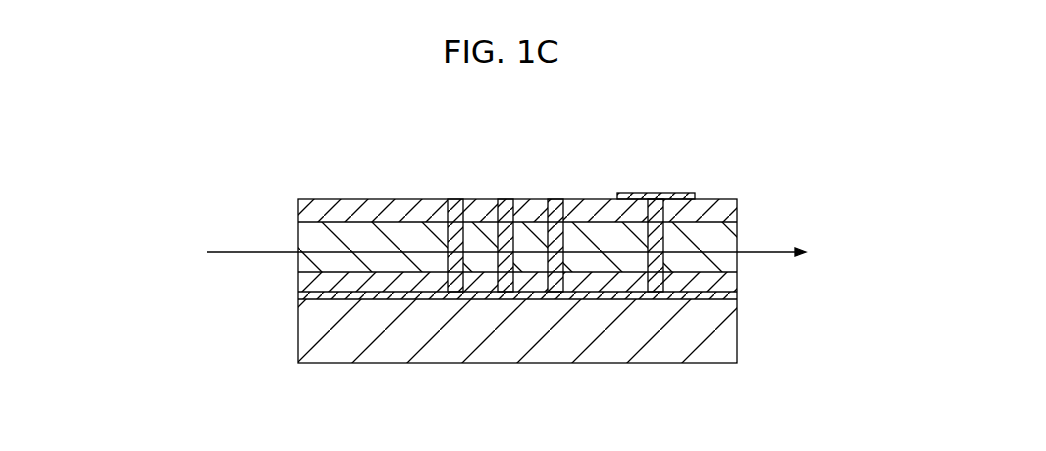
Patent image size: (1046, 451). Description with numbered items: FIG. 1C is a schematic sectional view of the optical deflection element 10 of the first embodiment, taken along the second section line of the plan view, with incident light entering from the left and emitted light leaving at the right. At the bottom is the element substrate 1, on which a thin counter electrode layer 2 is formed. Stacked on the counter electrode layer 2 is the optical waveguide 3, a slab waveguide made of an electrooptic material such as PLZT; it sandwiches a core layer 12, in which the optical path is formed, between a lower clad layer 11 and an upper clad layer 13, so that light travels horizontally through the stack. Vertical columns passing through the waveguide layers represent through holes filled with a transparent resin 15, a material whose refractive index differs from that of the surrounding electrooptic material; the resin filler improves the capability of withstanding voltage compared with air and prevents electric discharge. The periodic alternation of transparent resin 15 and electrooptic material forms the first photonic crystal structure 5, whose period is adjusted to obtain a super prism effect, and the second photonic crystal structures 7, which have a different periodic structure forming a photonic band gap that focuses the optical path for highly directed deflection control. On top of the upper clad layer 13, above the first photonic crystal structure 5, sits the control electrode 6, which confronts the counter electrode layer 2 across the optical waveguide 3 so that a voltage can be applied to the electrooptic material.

The optical deflection element 10 is at (378, 121).
The element substrate 1 is at (355, 342).
The counter electrode layer 2 is at (412, 300).
The optical waveguide 3 is at (892, 182).
The first photonic crystal structure 5 is at (633, 268).
The control electrode 6 is at (658, 194).
The second photonic crystal structures 7 is at (501, 185).
The lower clad layer 11 is at (305, 285).
The core layer 12 is at (300, 262).
The upper clad layer 13 is at (362, 202).
The transparent resin 15 is at (457, 283).